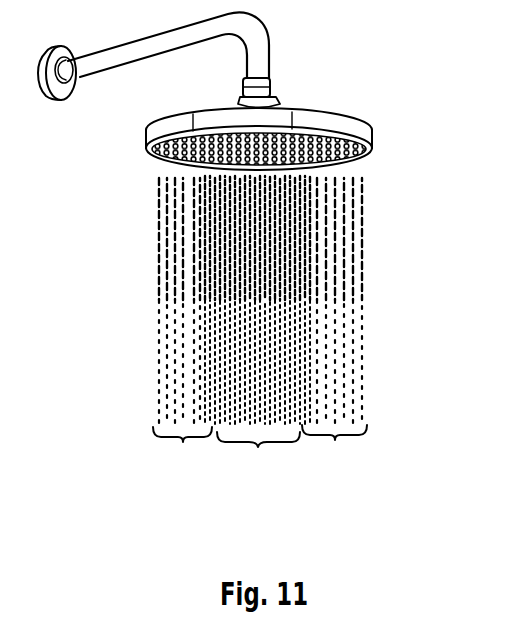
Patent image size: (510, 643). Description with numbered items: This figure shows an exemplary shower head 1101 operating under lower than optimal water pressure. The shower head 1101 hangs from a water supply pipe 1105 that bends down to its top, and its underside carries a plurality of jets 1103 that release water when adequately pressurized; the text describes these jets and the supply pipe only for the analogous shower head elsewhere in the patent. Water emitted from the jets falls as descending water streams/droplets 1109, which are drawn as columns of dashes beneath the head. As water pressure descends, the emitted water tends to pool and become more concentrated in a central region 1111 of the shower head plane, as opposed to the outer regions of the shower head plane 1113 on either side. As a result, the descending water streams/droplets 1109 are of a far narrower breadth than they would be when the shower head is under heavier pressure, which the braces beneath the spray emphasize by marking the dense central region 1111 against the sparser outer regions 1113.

The shower head 1101 is at (225, 136).
The nozzles 1103 is at (350, 138).
The shower arm 1105 is at (119, 53).
The water streams/droplets 1109 is at (295, 322).
The central region 1111 is at (257, 322).
The outer regions of the shower head plane 1113 is at (260, 320).